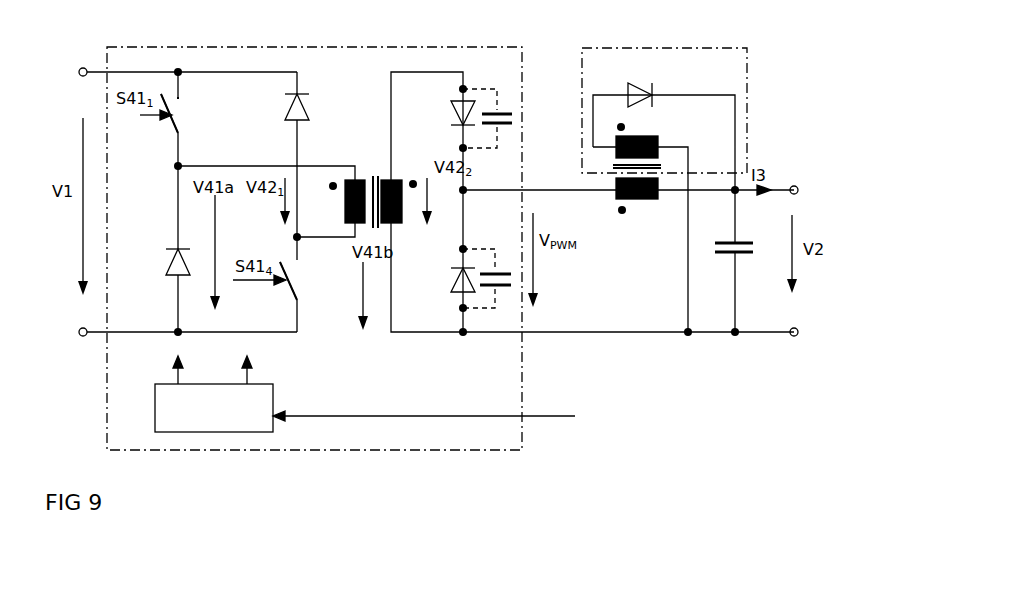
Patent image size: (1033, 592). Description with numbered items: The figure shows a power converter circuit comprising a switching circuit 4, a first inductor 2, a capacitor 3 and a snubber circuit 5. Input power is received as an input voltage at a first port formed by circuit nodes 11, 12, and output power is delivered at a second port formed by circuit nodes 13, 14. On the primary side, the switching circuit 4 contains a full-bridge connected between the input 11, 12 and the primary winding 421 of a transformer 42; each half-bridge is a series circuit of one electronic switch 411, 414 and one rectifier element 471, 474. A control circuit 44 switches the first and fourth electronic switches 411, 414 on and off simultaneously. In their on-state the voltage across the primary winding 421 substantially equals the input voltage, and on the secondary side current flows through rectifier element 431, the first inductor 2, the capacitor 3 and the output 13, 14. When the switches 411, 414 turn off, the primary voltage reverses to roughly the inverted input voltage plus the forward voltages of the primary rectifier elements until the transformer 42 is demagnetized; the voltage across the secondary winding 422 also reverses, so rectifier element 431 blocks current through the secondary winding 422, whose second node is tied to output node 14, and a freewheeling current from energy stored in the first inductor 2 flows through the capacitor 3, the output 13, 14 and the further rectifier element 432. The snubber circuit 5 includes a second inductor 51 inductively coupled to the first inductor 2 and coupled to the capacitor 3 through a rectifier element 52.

The first inductor 2 is at (650, 207).
The capacitor 3 is at (745, 241).
The switching circuit 4 is at (373, 47).
The snubber circuit 5 is at (643, 190).
The circuit node 11 is at (79, 68).
The circuit node 12 is at (80, 343).
The circuit node 13 is at (796, 184).
The circuit node 14 is at (797, 340).
The first electronic switch 411 is at (182, 113).
The fourth electronic switch 414 is at (305, 290).
The transformer 42 is at (363, 176).
The primary winding 421 is at (345, 206).
The secondary winding 422 is at (397, 178).
The rectifier element 431 is at (452, 110).
The further rectifier element 432 is at (452, 278).
The control circuit 44 is at (276, 396).
The rectifier element 471 is at (166, 260).
The rectifier element 474 is at (311, 108).
The second inductor 51 is at (664, 140).
The rectifier element 52 is at (656, 87).